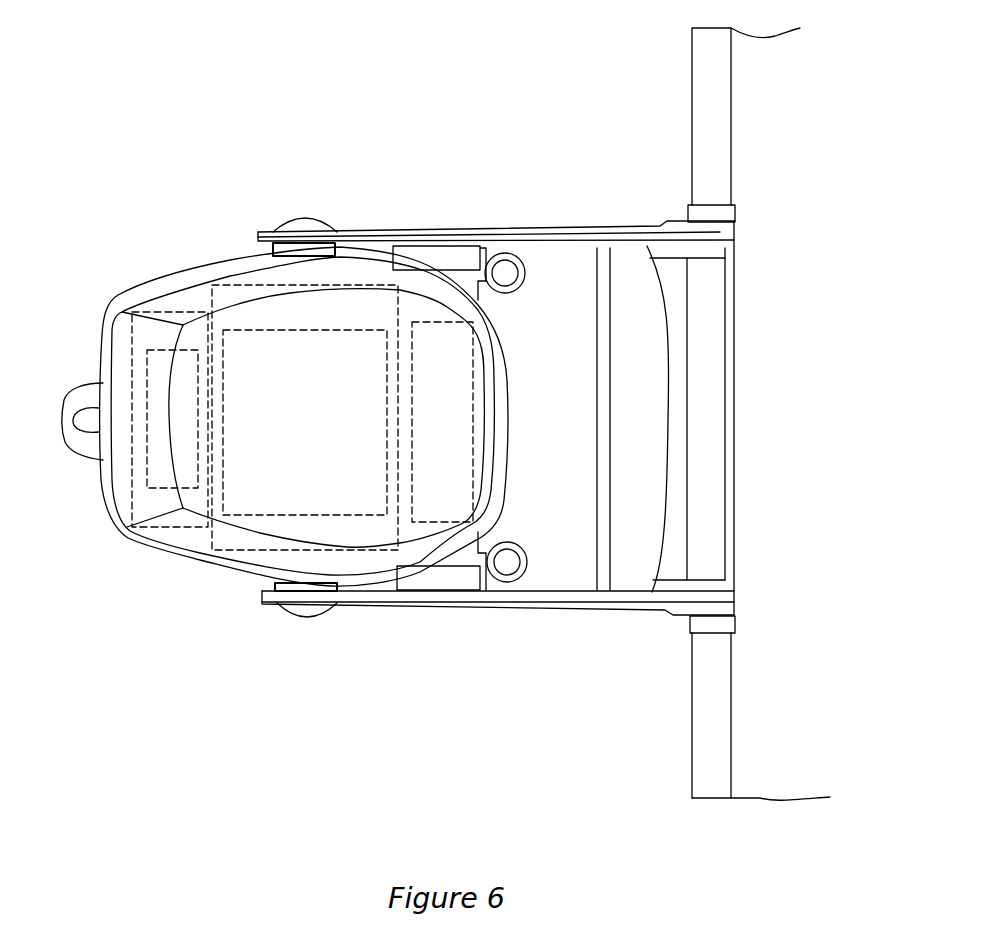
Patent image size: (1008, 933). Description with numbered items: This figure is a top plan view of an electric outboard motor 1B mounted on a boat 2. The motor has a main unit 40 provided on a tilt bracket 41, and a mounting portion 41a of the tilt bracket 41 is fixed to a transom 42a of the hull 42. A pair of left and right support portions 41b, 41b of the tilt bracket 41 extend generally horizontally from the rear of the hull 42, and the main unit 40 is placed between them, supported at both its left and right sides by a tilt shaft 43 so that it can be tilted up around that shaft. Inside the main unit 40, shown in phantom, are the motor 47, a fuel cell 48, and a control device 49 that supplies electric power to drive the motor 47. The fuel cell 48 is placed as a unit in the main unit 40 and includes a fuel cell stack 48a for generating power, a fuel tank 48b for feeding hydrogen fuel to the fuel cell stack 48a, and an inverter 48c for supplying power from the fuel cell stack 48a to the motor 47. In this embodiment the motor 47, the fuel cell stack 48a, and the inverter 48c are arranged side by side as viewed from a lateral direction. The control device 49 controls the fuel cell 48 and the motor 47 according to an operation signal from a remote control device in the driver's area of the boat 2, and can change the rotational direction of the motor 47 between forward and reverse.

The electric outboard motor 1B is at (606, 39).
The boat 2 is at (807, 140).
The main unit 40 is at (237, 177).
The tilt bracket 41 is at (745, 567).
The mounting portion 41a is at (736, 242).
The support portion 41b is at (440, 240).
The hull 42 is at (771, 816).
The transom 42a is at (727, 714).
The tilt shaft 43 is at (304, 222).
The motor 47 is at (260, 543).
The fuel cell 48 is at (533, 184).
The fuel cell stack 48a is at (459, 500).
The fuel tank 48b is at (358, 497).
The inverter 48c is at (173, 525).
The control device 49 is at (160, 377).